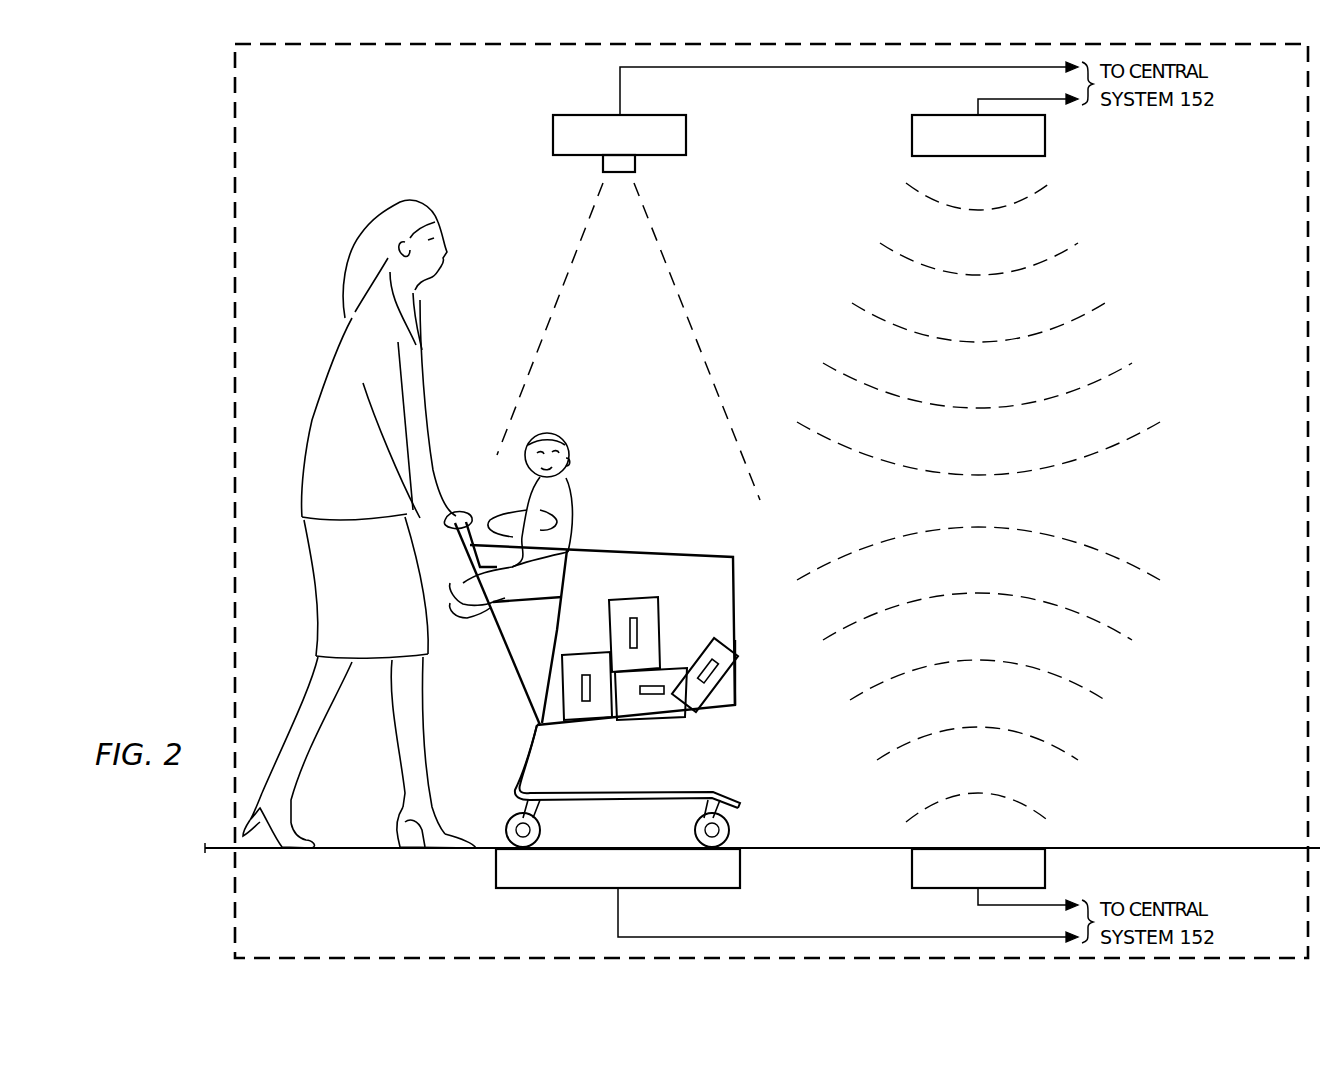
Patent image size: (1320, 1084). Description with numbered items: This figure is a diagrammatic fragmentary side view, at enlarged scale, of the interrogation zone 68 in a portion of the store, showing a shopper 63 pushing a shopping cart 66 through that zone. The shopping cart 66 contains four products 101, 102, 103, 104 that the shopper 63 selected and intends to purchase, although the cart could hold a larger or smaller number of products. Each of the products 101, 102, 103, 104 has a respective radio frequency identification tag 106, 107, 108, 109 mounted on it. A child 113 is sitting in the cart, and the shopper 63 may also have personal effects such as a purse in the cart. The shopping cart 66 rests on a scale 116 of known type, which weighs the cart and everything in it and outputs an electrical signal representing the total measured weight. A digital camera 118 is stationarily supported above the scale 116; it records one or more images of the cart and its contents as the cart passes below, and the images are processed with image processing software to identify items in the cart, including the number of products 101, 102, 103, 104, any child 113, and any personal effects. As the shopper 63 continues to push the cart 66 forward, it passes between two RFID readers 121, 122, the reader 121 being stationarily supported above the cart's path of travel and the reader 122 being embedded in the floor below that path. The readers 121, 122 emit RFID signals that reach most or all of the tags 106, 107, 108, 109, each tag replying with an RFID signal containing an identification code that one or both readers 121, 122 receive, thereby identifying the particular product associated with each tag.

The shopper 63 is at (345, 372).
The shopping cart 66 is at (700, 790).
The interrogation zone 68 is at (228, 208).
The product 101 is at (562, 722).
The product 102 is at (657, 610).
The product 103 is at (688, 707).
The product 104 is at (735, 670).
The radio frequency identification (RFID) tag 106 is at (585, 667).
The radio frequency identification (RFID) tag 107 is at (633, 614).
The radio frequency identification (RFID) tag 108 is at (645, 697).
The radio frequency identification (RFID) tag 109 is at (700, 650).
The child 113 is at (570, 445).
The scale 116 is at (560, 890).
The digital camera 118 is at (552, 131).
The RFID reader 121 is at (911, 131).
The RFID reader 122 is at (911, 872).